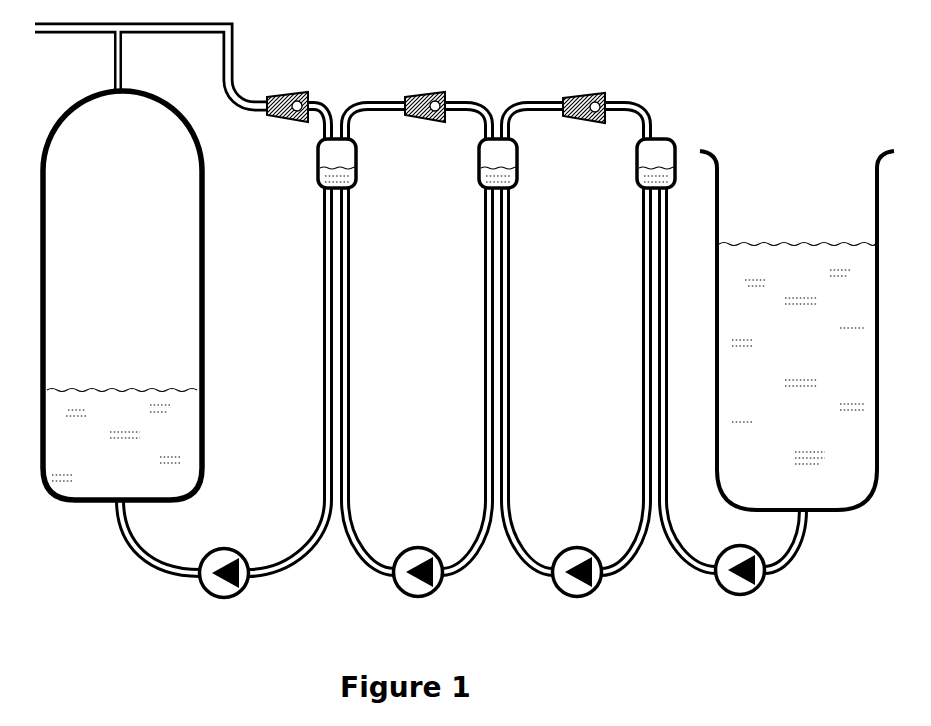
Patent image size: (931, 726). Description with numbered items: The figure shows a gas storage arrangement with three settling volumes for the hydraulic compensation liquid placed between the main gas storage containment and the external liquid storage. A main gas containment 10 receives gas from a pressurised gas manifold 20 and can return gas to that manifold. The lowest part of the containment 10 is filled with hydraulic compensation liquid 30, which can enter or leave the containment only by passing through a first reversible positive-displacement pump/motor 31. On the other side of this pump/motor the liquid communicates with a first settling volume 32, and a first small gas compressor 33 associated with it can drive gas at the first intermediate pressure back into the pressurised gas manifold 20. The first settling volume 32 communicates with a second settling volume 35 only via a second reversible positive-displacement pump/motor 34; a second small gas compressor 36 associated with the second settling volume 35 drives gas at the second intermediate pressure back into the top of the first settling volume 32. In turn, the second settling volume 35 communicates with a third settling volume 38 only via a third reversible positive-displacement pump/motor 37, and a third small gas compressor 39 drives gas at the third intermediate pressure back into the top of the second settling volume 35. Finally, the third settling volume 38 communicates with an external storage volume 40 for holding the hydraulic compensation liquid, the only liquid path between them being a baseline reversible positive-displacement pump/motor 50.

The main gas containment 10 is at (198, 298).
The pressurised gas manifold 20 is at (100, 33).
The hydraulic compensation liquid 30 is at (148, 412).
The first reversible positive-displacement pump/motor 31 is at (203, 587).
The first settling volume 32 is at (316, 152).
The first small gas compressor 33 is at (277, 95).
The second reversible positive-displacement pump/motor 34 is at (402, 589).
The second settling volume 35 is at (478, 153).
The second small gas compressor 36 is at (415, 93).
The third reversible positive-displacement pump/motor 37 is at (567, 592).
The third settling volume 38 is at (637, 158).
The third small gas compressor 39 is at (573, 95).
The external storage volume 40 is at (718, 187).
The baseline reversible positive-displacement pump/motor 50 is at (725, 592).